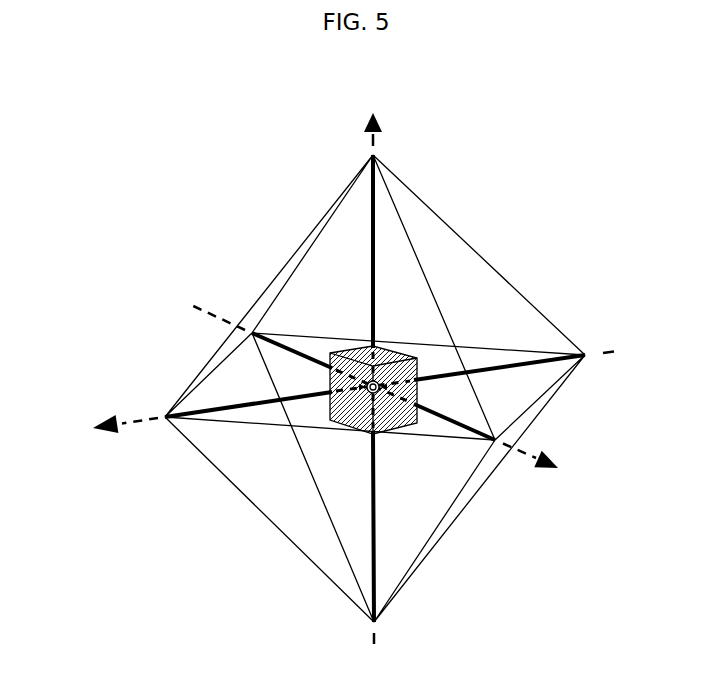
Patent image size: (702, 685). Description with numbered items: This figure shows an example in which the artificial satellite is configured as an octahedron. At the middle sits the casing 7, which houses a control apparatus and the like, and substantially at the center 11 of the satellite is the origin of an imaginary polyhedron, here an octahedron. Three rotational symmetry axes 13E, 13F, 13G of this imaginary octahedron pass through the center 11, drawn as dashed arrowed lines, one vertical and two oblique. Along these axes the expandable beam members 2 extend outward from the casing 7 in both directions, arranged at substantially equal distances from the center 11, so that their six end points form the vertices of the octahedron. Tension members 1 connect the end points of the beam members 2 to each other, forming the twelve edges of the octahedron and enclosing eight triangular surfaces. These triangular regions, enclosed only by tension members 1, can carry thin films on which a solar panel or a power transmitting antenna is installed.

The tension member 1 is at (288, 263).
The expandable beam member 2 is at (372, 229).
The casing 7 is at (393, 352).
The center 11 is at (365, 378).
The rotational symmetry axis 13E is at (373, 367).
The rotational symmetry axis 13F is at (331, 398).
The rotational symmetry axis 13G is at (396, 393).